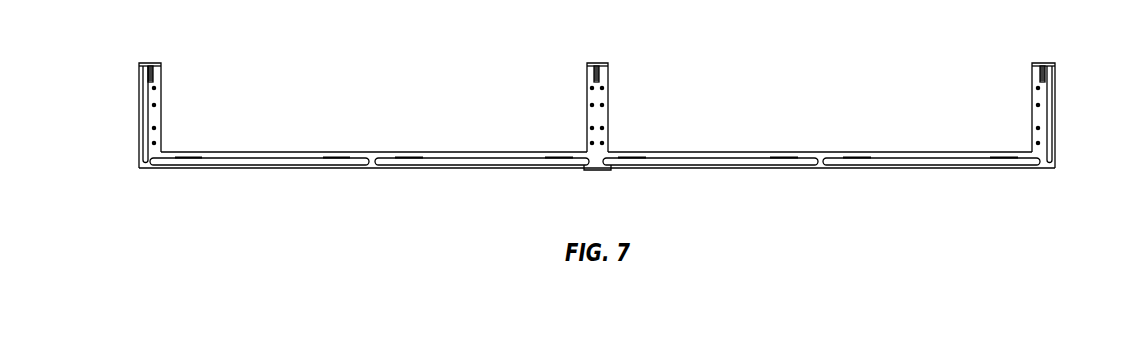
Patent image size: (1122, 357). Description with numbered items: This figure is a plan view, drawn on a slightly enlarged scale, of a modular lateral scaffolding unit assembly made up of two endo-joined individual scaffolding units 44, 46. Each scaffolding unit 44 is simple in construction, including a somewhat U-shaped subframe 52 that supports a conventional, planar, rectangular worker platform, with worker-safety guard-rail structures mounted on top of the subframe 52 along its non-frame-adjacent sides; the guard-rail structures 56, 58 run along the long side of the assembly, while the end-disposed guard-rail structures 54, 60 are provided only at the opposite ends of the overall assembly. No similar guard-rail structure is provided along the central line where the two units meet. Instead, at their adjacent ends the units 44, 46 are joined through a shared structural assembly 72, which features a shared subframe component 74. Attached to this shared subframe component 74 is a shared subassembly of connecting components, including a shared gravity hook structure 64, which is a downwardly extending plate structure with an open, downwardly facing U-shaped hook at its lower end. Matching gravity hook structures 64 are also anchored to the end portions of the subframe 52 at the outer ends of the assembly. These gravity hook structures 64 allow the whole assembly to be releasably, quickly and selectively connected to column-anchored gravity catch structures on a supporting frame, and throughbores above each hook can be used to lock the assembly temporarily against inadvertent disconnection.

The scaffolding unit 44 is at (343, 121).
The individual scaffolding unit 46 is at (851, 121).
The subframe 52 is at (157, 118).
The guard-rail structure 54 is at (143, 113).
The guard-rail structure 56 is at (261, 163).
The guard-rail structure 58 is at (485, 163).
The guard-rail structure 60 is at (1052, 113).
The gravity hook structure 64 is at (153, 77).
The shared structural assembly 72 is at (611, 116).
The shared subframe component 74 is at (594, 118).